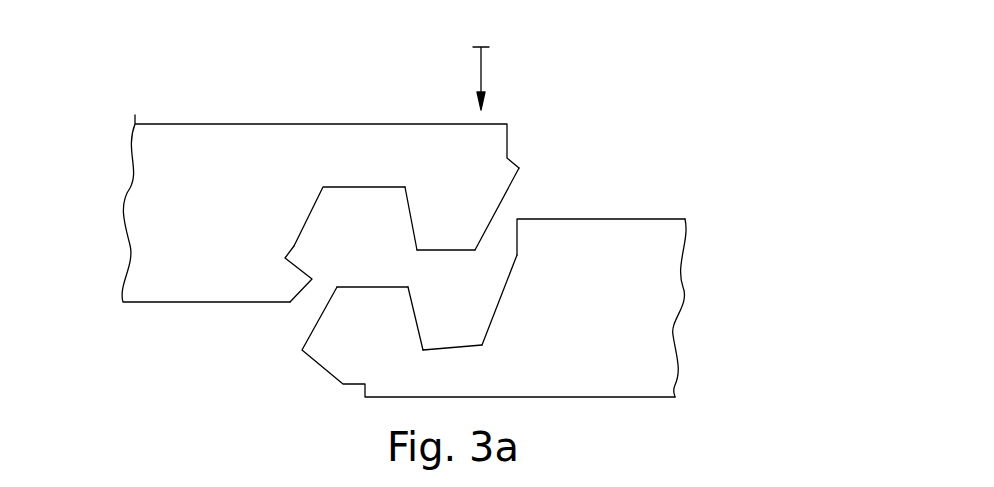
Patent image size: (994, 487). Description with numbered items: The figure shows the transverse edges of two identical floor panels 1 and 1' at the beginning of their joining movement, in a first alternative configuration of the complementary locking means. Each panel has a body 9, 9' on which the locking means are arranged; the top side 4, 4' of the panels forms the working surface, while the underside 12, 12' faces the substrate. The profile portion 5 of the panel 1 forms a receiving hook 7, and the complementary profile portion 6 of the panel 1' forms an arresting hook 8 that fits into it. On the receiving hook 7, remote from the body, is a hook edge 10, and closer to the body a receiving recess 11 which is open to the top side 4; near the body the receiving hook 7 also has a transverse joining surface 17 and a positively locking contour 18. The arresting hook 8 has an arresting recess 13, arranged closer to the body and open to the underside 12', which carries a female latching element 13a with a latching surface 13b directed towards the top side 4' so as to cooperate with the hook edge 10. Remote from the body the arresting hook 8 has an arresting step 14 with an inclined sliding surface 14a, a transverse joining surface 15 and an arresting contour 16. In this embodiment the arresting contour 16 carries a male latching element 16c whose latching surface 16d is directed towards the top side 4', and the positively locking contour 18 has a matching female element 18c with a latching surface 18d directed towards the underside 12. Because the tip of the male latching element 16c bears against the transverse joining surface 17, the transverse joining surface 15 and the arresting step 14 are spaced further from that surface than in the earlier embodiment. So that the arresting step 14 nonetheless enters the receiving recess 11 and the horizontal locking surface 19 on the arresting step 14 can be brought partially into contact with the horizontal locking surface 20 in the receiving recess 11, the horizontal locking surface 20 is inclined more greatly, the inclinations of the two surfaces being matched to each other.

The panel 1 is at (752, 138).
The panel 1' is at (124, 43).
The top side 4 is at (601, 202).
The top side 4' is at (127, 88).
The profile portion 5 is at (667, 415).
The profile portion 6 is at (239, 99).
The receiving hook 7 is at (645, 387).
The arresting hook 8 is at (221, 168).
The body 9 is at (712, 308).
The body 9' is at (95, 195).
The hook edge 10 is at (383, 342).
The receiving recess 11 is at (467, 338).
The underside 12 is at (362, 439).
The underside 12' is at (160, 342).
The arresting recess 13 is at (373, 214).
The female latching element 13a is at (300, 252).
The latching surface 13b is at (296, 262).
The arresting step 14 is at (457, 241).
The inclined sliding surface 14a is at (487, 232).
The transverse joining surface 15 is at (509, 124).
The arresting contour 16 is at (540, 173).
The male latching element 16c is at (515, 168).
The latching surface 16d is at (519, 168).
The transverse joining surface 17 is at (490, 213).
The positively locking contour 18 is at (462, 258).
The female element 18c is at (520, 258).
The latching surface 18d is at (520, 260).
The horizontal locking surface 19 is at (405, 200).
The horizontal locking surface 20 is at (417, 312).